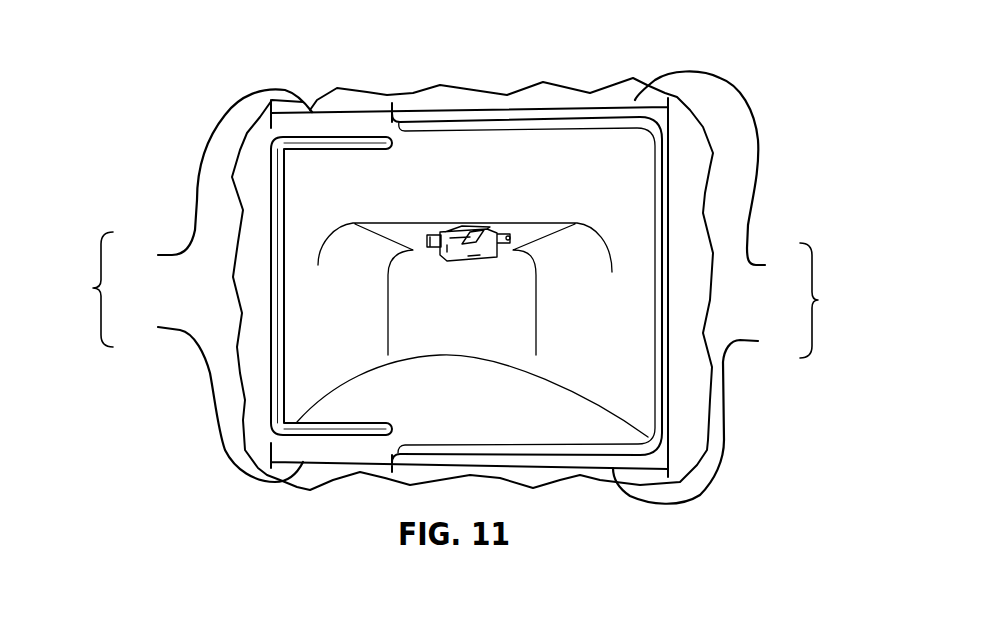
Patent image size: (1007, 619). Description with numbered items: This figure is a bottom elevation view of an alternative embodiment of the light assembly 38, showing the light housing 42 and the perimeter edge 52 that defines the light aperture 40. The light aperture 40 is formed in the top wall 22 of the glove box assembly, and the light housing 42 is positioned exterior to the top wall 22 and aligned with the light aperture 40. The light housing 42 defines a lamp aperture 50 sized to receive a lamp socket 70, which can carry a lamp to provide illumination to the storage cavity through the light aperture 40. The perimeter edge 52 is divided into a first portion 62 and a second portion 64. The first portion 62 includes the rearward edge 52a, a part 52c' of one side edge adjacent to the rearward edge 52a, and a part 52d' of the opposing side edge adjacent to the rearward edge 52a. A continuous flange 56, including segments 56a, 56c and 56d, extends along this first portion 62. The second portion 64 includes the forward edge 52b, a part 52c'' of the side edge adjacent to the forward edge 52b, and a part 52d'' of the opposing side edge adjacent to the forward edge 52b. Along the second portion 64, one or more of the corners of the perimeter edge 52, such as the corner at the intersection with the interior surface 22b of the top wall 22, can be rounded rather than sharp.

The light assembly 38 is at (600, 68).
The top wall 22 is at (677, 137).
The interior surface 22b is at (705, 269).
The perimeter edge 52 is at (662, 168).
The rearward edge 52a is at (270, 287).
The forward edge 52b is at (663, 336).
The part of side edge 52c' is at (215, 178).
The part of side edge 52c'' is at (720, 174).
The part of side edge 52d' is at (210, 398).
The part of side edge 52d'' is at (708, 417).
The flange 56 is at (280, 233).
The flange segment 56a is at (280, 355).
The flange segment 56c is at (333, 148).
The flange segment 56d is at (340, 427).
The light aperture 40 is at (266, 313).
The light housing 42 is at (627, 370).
The lamp aperture 50 is at (502, 227).
The lamp socket 70 is at (477, 260).
The first portion 62 is at (90, 289).
The second portion 64 is at (822, 300).